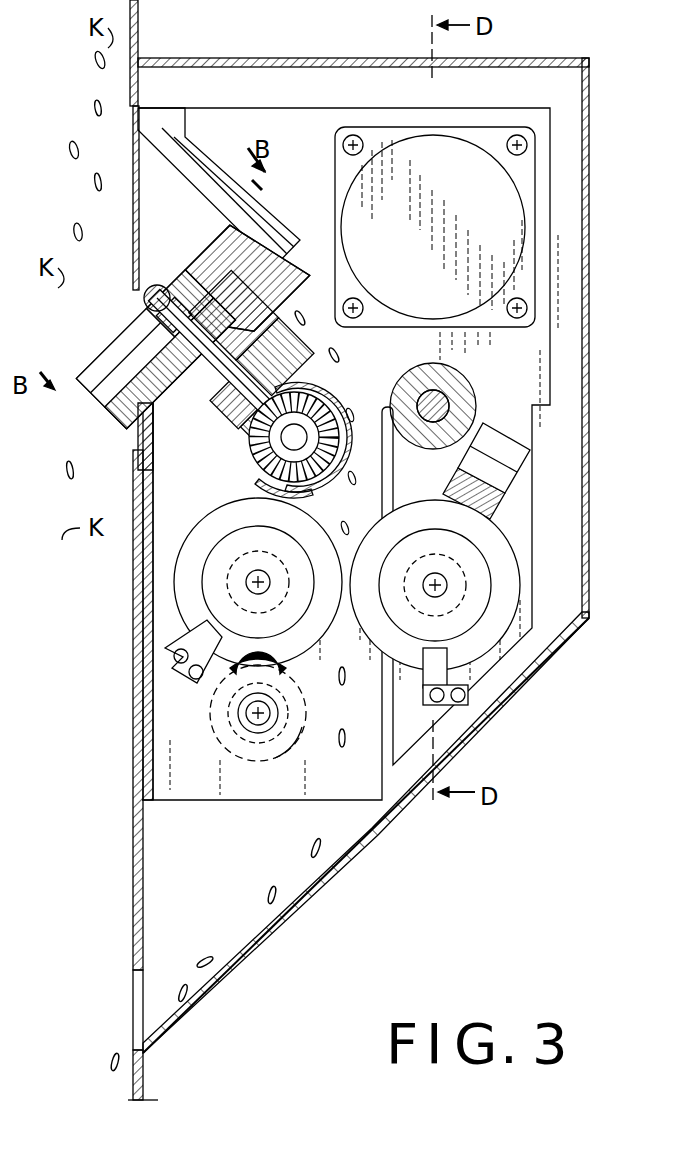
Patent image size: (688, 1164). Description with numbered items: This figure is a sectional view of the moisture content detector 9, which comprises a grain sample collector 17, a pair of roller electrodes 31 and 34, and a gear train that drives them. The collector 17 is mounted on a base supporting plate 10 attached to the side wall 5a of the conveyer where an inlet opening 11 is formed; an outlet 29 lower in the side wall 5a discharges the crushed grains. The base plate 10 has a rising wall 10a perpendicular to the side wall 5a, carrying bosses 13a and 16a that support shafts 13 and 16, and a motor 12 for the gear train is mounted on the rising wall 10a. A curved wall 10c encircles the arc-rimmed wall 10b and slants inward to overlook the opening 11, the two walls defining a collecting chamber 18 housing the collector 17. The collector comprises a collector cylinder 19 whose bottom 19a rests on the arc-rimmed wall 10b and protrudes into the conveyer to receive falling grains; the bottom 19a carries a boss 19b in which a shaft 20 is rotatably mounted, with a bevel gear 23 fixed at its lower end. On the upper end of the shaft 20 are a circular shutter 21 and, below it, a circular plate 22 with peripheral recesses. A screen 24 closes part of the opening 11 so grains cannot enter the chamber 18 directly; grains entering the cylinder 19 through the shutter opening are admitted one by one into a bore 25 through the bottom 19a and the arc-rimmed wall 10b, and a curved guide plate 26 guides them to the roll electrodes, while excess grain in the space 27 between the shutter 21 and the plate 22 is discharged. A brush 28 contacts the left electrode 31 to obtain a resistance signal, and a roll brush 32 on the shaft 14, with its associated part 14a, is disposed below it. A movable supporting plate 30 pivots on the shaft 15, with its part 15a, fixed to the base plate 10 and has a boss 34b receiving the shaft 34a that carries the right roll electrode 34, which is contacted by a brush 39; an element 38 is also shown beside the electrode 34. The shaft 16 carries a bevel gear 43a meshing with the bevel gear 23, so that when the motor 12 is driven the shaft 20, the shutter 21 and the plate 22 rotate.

The side wall 5a is at (133, 930).
The moisture content detector 9 is at (236, 975).
The base supporting plate 10 is at (153, 720).
The rising wall 10a is at (313, 123).
The arc-rimmed wall 10b is at (153, 430).
The curved wall 10c is at (258, 210).
The inlet opening 11 is at (146, 286).
The motor 12 is at (424, 246).
The shaft 13 is at (262, 572).
The boss 13a is at (285, 640).
The shaft 14 is at (270, 712).
The brush shaft 14a is at (243, 730).
The shaft 15 is at (440, 392).
The roller shaft 15a is at (432, 392).
The shaft 16 is at (258, 468).
The boss 16a is at (327, 480).
The grain sample collector 17 is at (165, 248).
The collecting chamber 18 is at (193, 190).
The collector cylinder 19 is at (118, 430).
The bottom 19a is at (225, 398).
The boss 19b is at (255, 425).
The shaft 20 is at (195, 318).
The circular shutter 21 is at (130, 350).
The circular plate 22 is at (100, 378).
The bevel gear 23 is at (300, 372).
The screen 24 is at (133, 182).
The bore 25 is at (270, 258).
The curved guide plate 26 is at (290, 350).
The space 27 is at (145, 300).
The brush 28 is at (168, 645).
The outlet 29 is at (133, 1015).
The movable supporting plate 30 is at (520, 498).
The roller electrode 31 is at (208, 525).
The roll brush 32 is at (262, 770).
The right roll electrode 34 is at (510, 580).
The shaft 34a is at (445, 588).
The boss 34b is at (430, 560).
The scraper blade 38 is at (515, 515).
The brush 39 is at (430, 675).
The bevel gear 43a is at (292, 435).